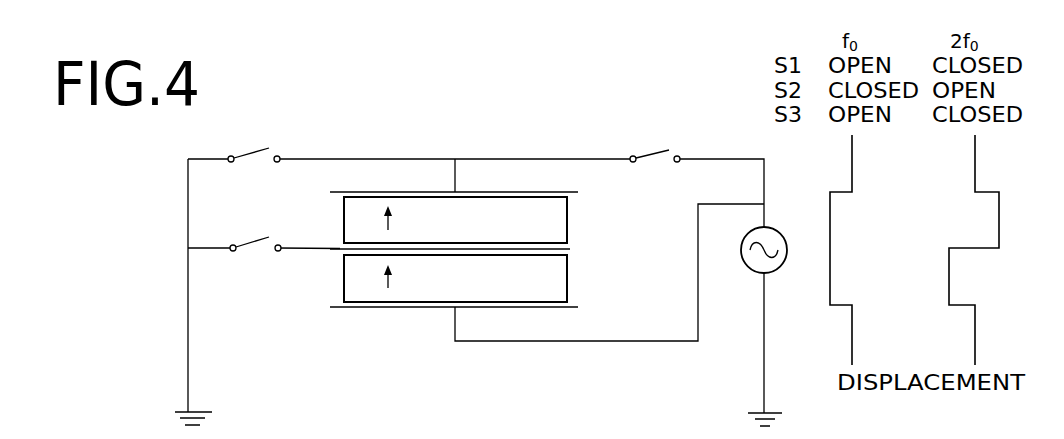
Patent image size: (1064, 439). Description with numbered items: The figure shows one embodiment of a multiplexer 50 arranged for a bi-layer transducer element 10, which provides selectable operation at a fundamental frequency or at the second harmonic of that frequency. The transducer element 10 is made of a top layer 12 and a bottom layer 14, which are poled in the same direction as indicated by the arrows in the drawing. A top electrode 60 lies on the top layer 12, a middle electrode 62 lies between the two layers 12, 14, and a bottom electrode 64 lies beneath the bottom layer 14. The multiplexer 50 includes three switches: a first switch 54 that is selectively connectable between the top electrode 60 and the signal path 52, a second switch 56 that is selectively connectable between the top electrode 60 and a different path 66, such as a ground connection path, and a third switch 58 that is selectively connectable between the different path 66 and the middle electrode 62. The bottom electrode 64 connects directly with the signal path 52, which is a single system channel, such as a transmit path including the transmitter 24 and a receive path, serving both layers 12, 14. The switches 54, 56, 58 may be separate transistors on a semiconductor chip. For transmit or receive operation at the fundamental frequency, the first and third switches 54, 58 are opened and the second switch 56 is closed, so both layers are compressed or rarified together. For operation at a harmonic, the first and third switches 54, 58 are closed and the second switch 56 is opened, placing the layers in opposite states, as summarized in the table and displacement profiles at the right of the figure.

The bi-layer transducer element 10 is at (396, 324).
The top layer 12 is at (567, 223).
The bottom layer 14 is at (567, 283).
The transmitter 24 is at (788, 224).
The multiplexer 50 is at (487, 118).
The signal path 52 is at (762, 209).
The first switch 54 is at (650, 155).
The second switch 56 is at (257, 150).
The third switch 58 is at (233, 252).
The top electrode 60 is at (557, 192).
The middle electrode 62 is at (572, 251).
The bottom electrode 64 is at (565, 308).
The different path 66 is at (188, 190).